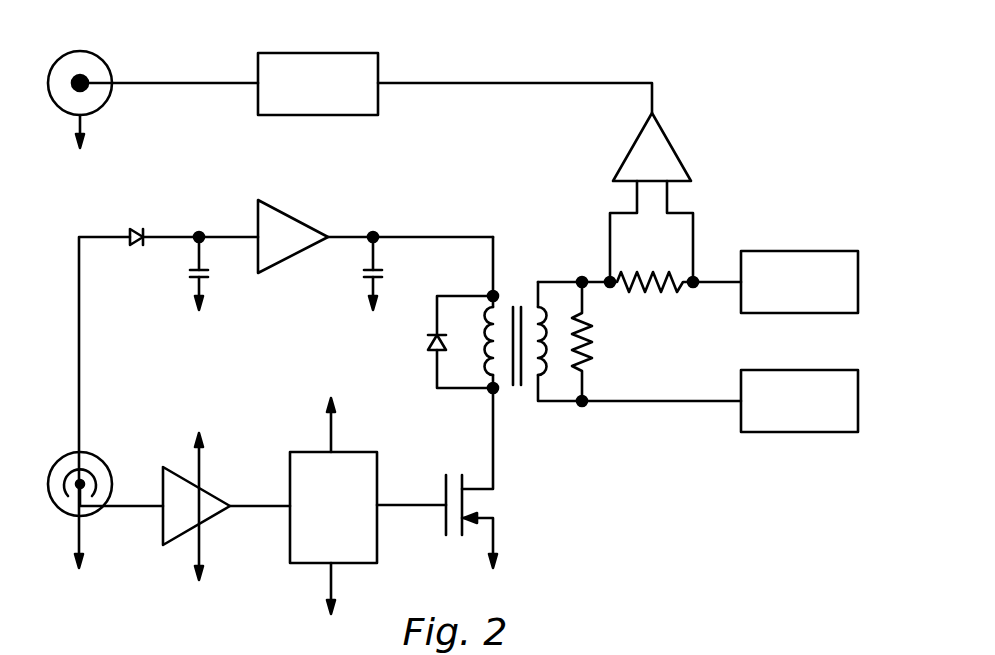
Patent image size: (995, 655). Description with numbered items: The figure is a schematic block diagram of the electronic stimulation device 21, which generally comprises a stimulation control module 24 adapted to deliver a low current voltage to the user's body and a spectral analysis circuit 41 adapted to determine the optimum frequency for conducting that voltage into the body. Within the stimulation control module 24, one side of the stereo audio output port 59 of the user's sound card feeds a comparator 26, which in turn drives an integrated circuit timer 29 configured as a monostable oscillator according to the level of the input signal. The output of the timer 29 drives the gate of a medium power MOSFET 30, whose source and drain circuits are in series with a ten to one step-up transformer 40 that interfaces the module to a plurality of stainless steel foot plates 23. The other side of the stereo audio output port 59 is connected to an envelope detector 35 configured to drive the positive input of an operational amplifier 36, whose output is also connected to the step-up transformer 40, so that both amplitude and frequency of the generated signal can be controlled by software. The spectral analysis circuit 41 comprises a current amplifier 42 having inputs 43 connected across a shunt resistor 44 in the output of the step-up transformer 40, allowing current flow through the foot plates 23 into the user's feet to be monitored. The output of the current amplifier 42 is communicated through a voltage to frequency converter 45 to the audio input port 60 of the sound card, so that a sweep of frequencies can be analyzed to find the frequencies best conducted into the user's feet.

The electronic stimulation device 21 is at (726, 485).
The foot plates 23 is at (792, 251).
The stimulation control module 24 is at (64, 243).
The comparator 26 is at (162, 524).
The 555 integrated circuit timer 29 is at (290, 527).
The medium power MOSFET 30 is at (490, 503).
The envelope detector 35 is at (135, 228).
The operational amplifier 36 is at (288, 213).
The step-up transformer 40 is at (514, 388).
The spectral analysis circuit 41 is at (732, 76).
The current amplifier 42 is at (668, 142).
The inputs 43 is at (636, 197).
The shunt resistor 44 is at (650, 289).
The voltage to frequency converter 45 is at (323, 53).
The stereo audio output port 59 is at (106, 462).
The audio input port 60 is at (92, 52).